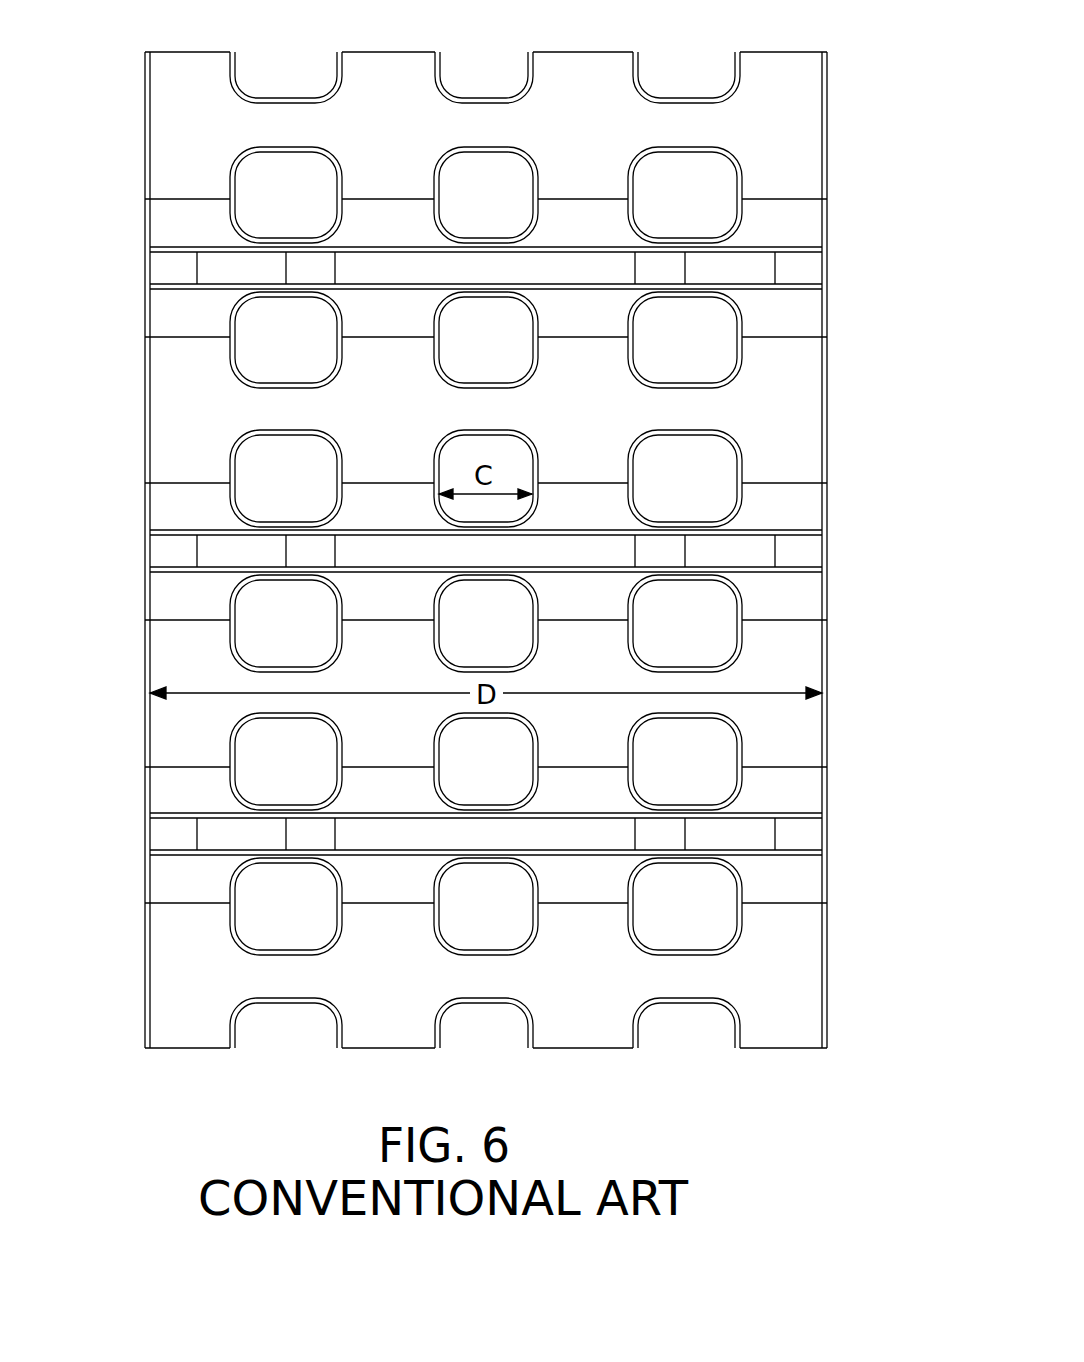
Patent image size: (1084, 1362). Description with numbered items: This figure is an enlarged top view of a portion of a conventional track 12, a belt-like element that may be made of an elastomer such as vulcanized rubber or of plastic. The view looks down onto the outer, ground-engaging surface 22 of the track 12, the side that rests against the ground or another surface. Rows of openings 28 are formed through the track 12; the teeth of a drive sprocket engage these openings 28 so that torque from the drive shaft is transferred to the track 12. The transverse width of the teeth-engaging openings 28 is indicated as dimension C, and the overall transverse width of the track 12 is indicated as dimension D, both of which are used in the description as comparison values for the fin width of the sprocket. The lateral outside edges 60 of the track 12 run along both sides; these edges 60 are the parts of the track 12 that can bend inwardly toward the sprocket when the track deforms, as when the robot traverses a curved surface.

The track 12 is at (863, 158).
The outer, ground-engaging surface 22 is at (805, 97).
The openings 28 is at (510, 210).
The lateral outside edges 60 is at (145, 406).